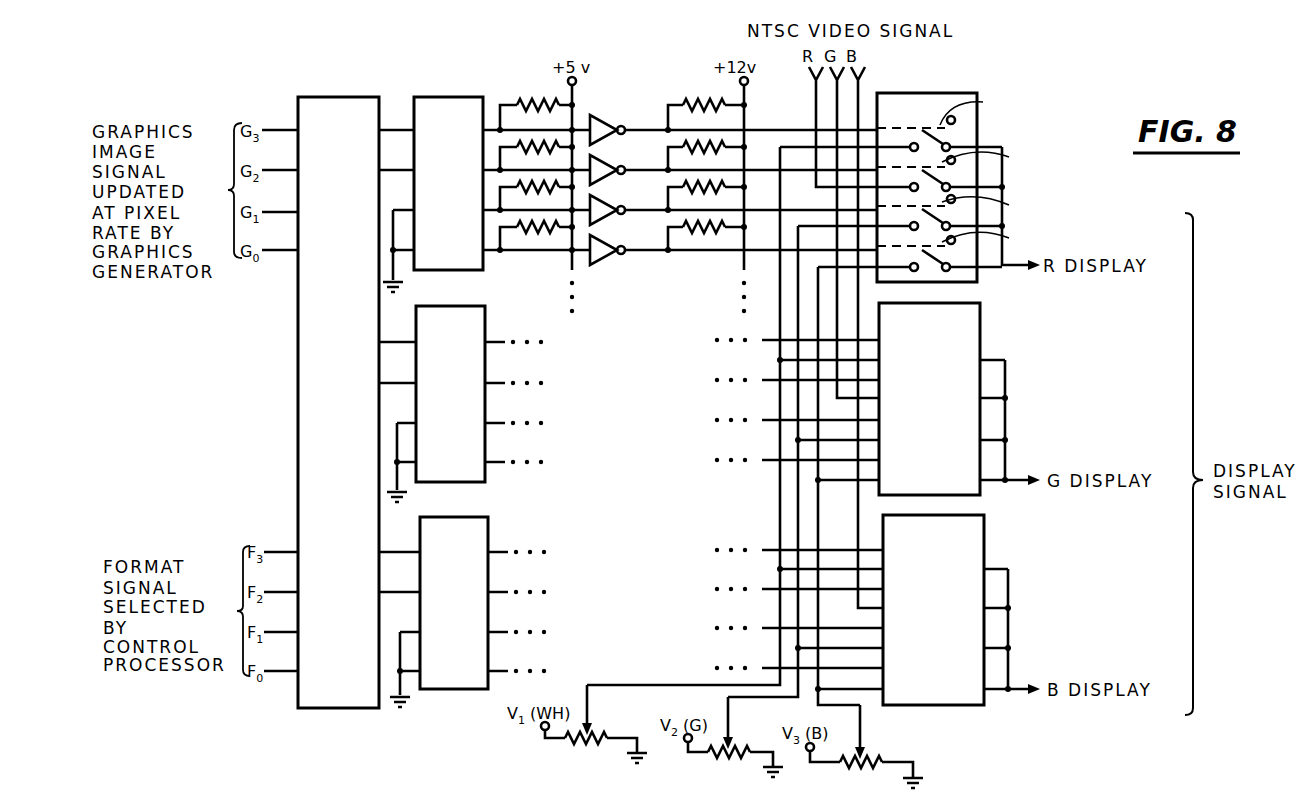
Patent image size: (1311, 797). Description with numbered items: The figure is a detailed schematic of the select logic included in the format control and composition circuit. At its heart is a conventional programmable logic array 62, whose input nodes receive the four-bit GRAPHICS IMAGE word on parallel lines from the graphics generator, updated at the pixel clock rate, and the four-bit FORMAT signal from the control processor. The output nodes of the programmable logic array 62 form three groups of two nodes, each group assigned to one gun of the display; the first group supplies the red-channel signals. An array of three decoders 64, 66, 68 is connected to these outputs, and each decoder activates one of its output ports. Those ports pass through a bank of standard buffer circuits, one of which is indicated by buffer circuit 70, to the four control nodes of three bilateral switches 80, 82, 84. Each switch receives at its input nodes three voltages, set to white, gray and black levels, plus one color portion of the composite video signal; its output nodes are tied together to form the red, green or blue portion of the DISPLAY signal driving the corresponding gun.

The programmable logic array 62 is at (338, 98).
The decoder 64 is at (452, 96).
The decoder 66 is at (454, 306).
The decoder 68 is at (458, 518).
The buffer circuit 70 is at (620, 100).
The bilateral switch 80 is at (944, 93).
The bilateral switch 82 is at (948, 303).
The bilateral switch 84 is at (948, 513).